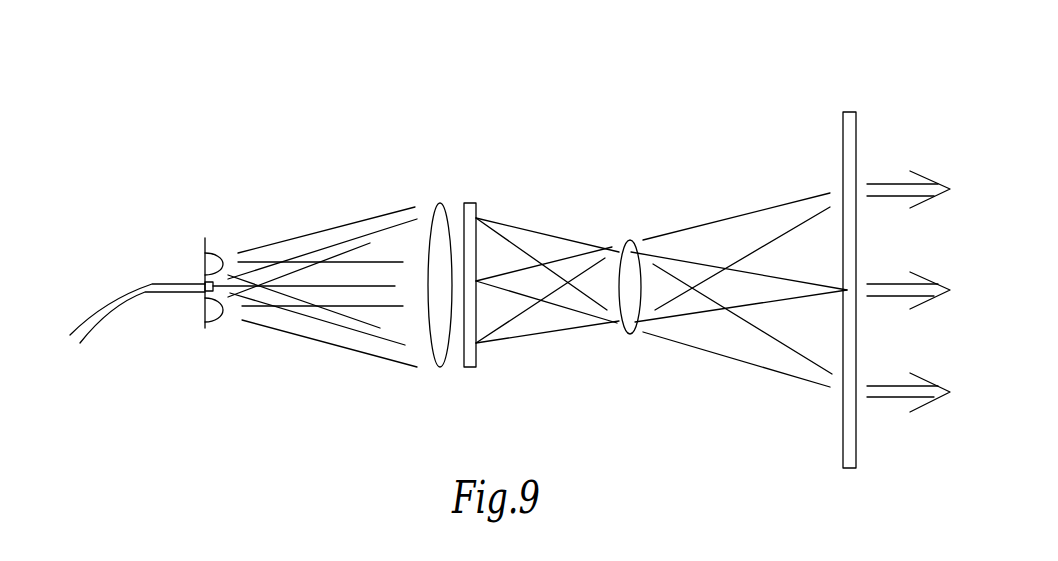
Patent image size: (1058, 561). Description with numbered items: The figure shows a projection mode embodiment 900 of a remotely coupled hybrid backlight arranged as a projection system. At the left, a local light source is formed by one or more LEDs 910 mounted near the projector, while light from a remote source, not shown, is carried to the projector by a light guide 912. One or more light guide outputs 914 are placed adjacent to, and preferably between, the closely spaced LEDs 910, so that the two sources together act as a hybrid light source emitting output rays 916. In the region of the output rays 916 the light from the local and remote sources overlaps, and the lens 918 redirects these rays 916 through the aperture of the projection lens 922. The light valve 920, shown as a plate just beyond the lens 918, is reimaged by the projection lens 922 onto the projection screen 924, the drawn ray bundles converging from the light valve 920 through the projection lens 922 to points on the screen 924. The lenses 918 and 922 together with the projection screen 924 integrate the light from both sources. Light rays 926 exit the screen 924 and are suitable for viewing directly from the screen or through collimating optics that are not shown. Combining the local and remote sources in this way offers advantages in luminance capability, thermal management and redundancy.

The projection mode embodiment 900 is at (133, 59).
The LEDs 910 is at (218, 260).
The light guide 912 is at (140, 287).
The light guide outputs 914 is at (183, 292).
The output rays 916 is at (316, 381).
The lens 918 is at (442, 358).
The light valve 920 is at (477, 352).
The projection lens 922 is at (630, 242).
The projection screen 924 is at (837, 523).
The light rays 926 is at (902, 168).